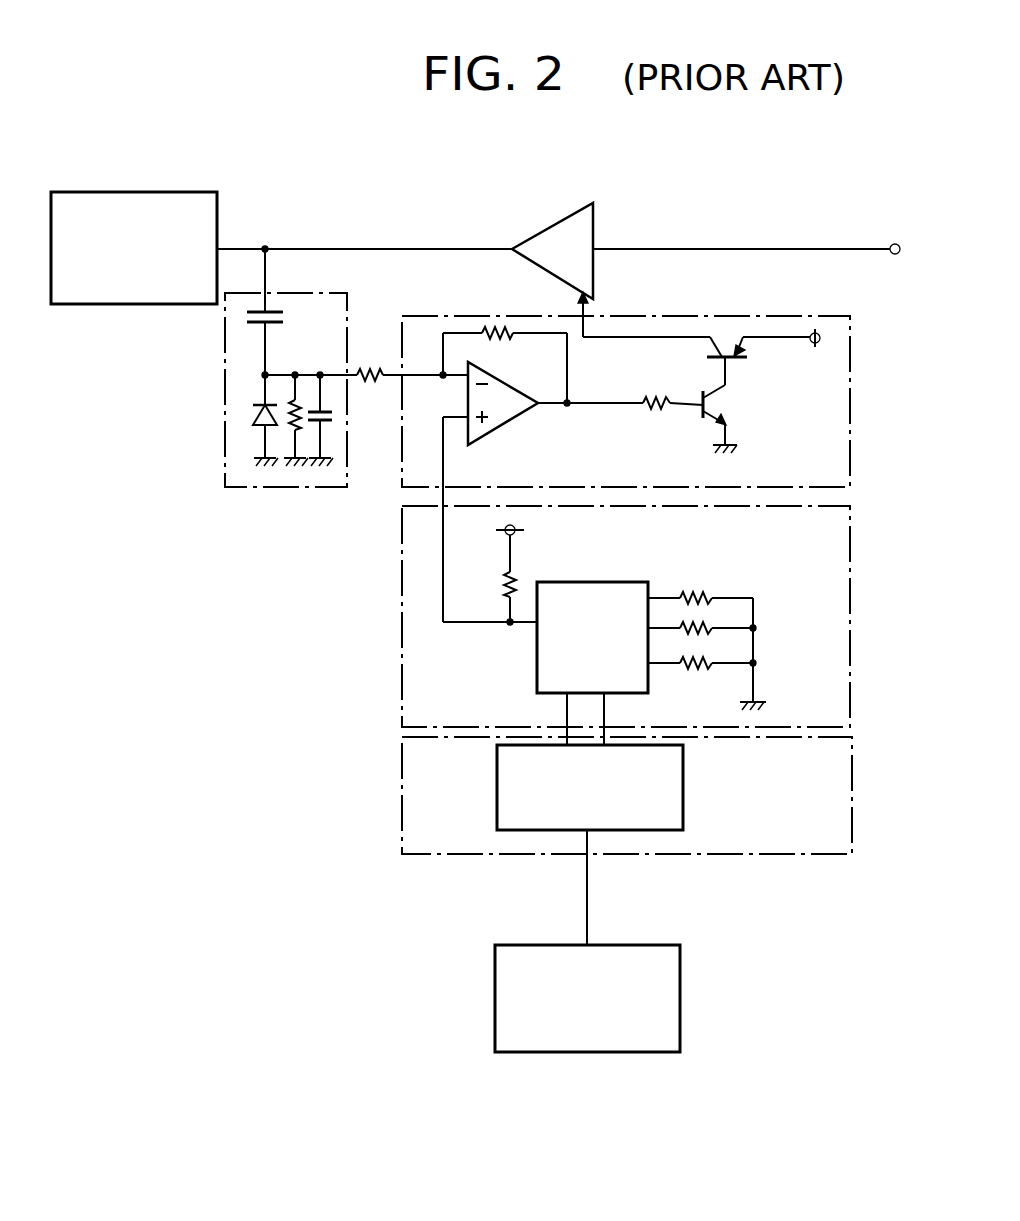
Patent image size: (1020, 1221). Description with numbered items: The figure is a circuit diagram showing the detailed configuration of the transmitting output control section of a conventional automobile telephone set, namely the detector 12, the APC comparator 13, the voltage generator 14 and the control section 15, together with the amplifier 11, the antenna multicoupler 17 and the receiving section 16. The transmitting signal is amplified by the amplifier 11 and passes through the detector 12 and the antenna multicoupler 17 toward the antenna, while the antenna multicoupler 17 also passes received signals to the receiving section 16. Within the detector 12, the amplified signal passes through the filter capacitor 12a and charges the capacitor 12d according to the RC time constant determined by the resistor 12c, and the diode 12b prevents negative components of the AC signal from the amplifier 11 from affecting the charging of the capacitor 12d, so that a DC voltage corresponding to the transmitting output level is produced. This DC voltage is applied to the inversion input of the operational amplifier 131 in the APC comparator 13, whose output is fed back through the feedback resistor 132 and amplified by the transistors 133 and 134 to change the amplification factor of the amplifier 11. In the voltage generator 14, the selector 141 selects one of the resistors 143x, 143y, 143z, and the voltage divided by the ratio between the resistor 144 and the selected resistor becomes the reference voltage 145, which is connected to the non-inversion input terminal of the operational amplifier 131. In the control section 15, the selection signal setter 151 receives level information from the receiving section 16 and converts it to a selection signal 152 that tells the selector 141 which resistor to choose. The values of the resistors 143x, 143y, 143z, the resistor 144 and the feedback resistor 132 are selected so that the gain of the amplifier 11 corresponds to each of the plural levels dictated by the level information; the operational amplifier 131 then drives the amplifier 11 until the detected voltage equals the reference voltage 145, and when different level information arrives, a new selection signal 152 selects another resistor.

The amplifier 11 is at (557, 222).
The detector 12 is at (300, 292).
The filter capacitor 12a is at (283, 318).
The diode 12b is at (250, 412).
The resistor 12c is at (290, 432).
The capacitor 12d is at (333, 413).
The APC comparator 13 is at (760, 316).
The operational amplifier 131 is at (513, 422).
The feedback resistor 132 is at (503, 338).
The transistor 133 is at (721, 405).
The transistor 134 is at (733, 348).
The voltage generator 14 is at (853, 640).
The selector 141 is at (613, 582).
The resistor 143x is at (700, 588).
The resistor 143y is at (715, 623).
The resistor 143z is at (700, 669).
The resistor 144 is at (517, 580).
The reference voltage 145 is at (443, 606).
The control section 15 is at (852, 848).
The selection signal setter 151 is at (683, 818).
The selection signal 152 is at (567, 710).
The receiving section 16 is at (664, 945).
The antenna multicoupler 17 is at (155, 192).